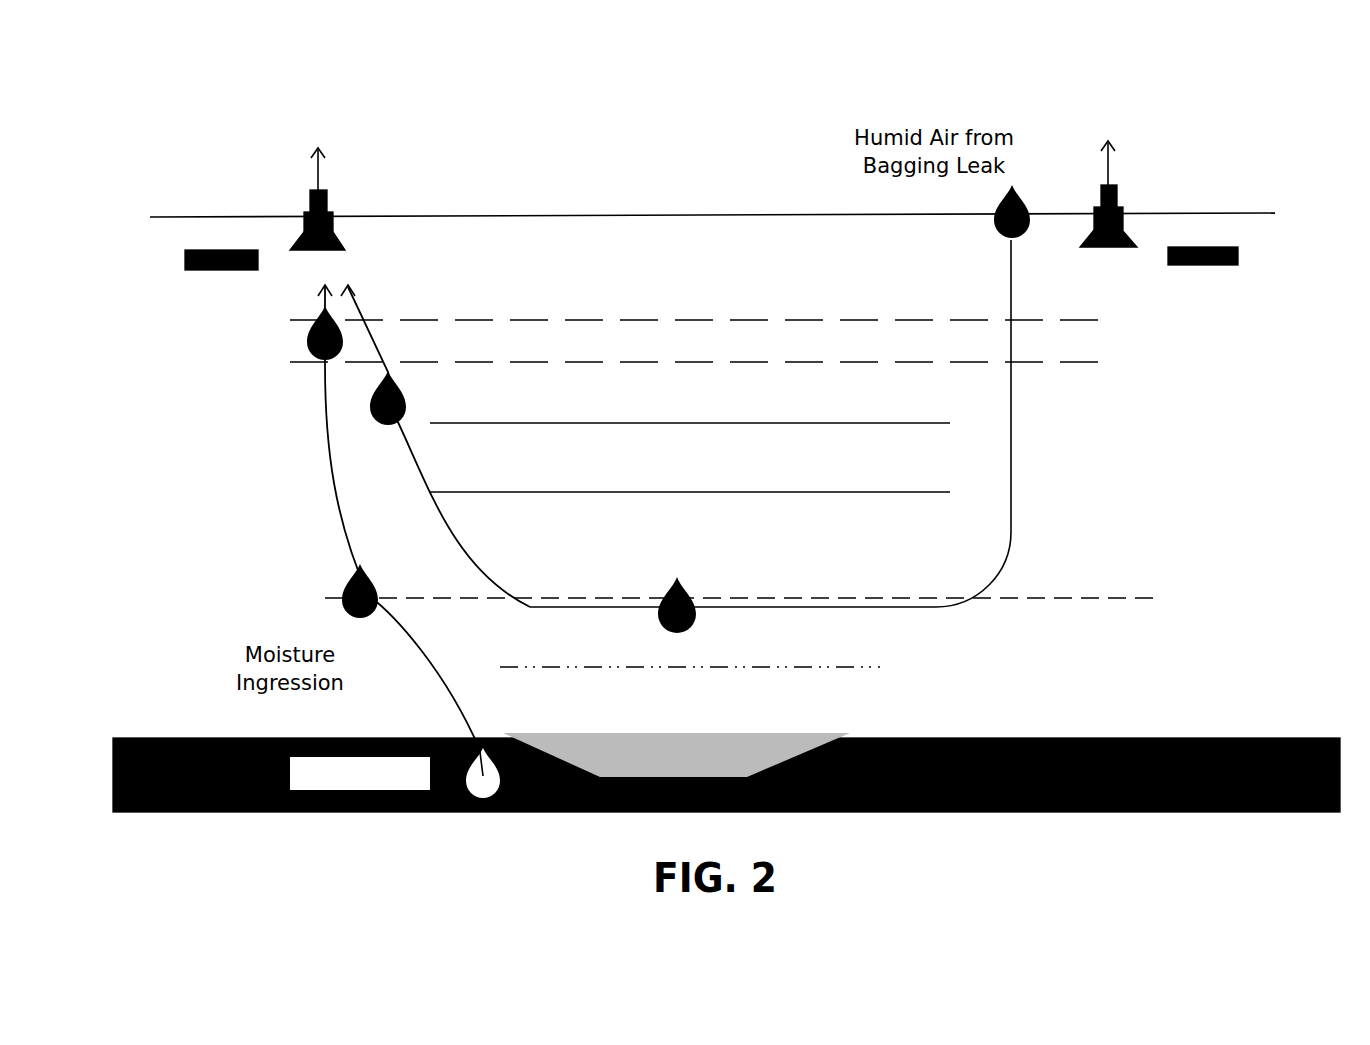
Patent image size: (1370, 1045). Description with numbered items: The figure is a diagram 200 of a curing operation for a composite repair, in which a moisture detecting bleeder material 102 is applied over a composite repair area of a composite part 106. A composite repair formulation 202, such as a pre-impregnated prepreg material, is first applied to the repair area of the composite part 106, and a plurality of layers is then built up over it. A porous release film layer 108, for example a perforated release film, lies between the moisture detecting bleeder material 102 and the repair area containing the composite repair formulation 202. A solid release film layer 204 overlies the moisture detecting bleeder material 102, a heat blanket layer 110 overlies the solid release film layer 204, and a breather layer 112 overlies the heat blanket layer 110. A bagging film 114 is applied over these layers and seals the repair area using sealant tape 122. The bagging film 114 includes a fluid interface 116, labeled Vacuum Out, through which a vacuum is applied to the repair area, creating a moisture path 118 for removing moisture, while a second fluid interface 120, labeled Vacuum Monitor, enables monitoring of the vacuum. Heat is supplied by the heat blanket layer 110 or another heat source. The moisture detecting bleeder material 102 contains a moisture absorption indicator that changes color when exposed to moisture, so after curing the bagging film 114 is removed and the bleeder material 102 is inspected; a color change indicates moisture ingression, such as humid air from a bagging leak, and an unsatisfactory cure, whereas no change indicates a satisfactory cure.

The diagram 200 is at (146, 49).
The moisture detecting bleeder material 102 is at (1244, 632).
The composite part 106 is at (403, 786).
The porous release film layer 108 is at (964, 719).
The heat blanket layer 110 is at (1071, 446).
The breather layer 112 is at (1245, 344).
The bagging film 114 is at (703, 169).
The fluid interface 116 is at (178, 187).
The moisture path 118 is at (210, 442).
The second fluid interface 120 is at (1211, 184).
The sealant tape 122 is at (141, 319).
The composite repair formulation 202 is at (659, 764).
The solid release film layer 204 is at (1071, 527).